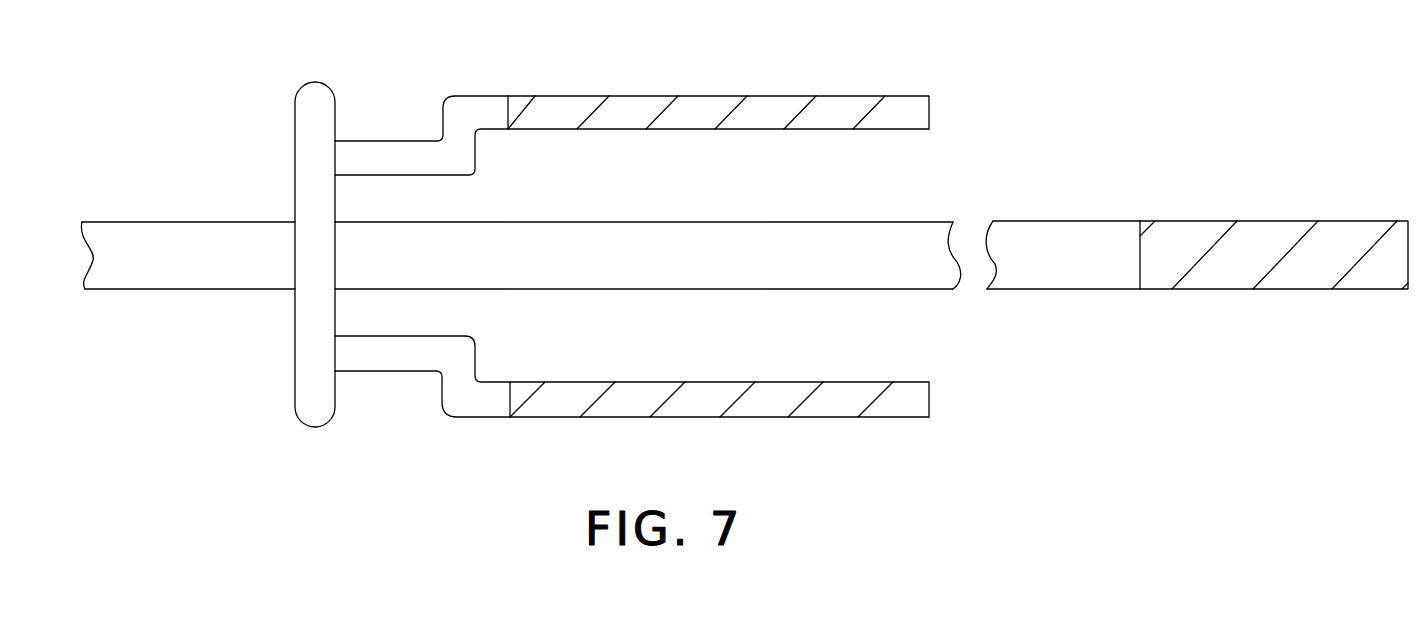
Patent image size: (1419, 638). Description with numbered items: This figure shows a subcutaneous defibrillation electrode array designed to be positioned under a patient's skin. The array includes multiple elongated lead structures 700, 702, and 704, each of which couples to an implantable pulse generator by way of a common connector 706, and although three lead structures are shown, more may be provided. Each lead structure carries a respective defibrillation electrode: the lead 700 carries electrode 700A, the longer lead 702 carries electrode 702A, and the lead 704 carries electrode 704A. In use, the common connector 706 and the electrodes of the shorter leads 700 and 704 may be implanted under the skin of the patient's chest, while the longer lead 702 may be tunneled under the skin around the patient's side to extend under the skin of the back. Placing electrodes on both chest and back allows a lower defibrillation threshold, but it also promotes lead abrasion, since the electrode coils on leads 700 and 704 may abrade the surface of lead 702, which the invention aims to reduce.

The lead structure 700 is at (463, 96).
The defibrillation electrode 700A is at (860, 94).
The lead structure 702 is at (771, 220).
The defibrillation electrode 702A is at (1280, 220).
The lead structure 704 is at (477, 354).
The defibrillation electrode 704A is at (868, 382).
The common connector 706 is at (153, 291).